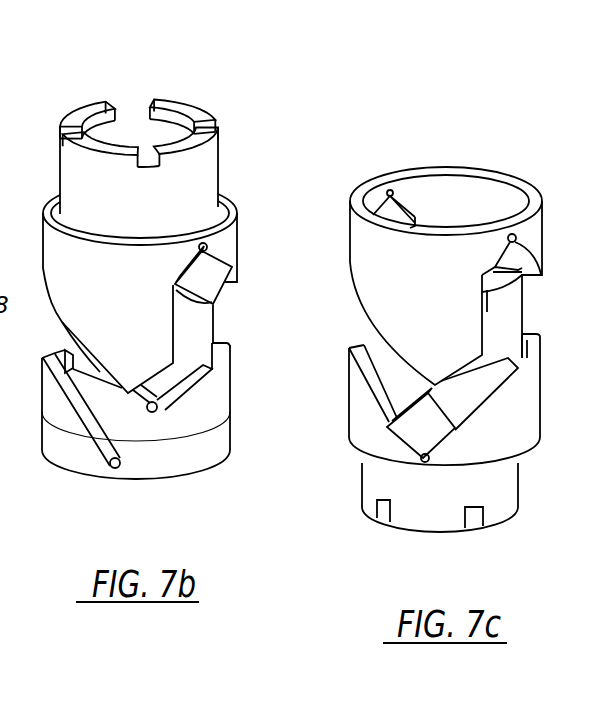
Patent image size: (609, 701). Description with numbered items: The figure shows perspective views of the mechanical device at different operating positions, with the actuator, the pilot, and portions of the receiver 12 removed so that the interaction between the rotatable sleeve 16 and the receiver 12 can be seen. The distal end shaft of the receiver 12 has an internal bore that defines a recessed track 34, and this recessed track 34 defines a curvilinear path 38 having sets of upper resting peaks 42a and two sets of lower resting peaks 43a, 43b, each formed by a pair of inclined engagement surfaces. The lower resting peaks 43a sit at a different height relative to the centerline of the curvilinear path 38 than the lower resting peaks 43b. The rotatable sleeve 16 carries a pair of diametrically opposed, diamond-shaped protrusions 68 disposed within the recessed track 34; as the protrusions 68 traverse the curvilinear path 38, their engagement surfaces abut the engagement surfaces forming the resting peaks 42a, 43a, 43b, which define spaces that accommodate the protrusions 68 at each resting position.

In FIG. 7B, the receiver 12 is at (83, 485).
In FIG. 7C, the receiver 12 is at (428, 148).
In FIG. 7B, the rotatable sleeve 16 is at (193, 90).
In FIG. 7C, the rotatable sleeve 16 is at (347, 481).
In FIG. 7B, the recessed track 34 is at (107, 408).
In FIG. 7C, the recessed track 34 is at (480, 381).
In FIG. 7B, the curvilinear path 38 is at (136, 408).
In FIG. 7C, the curvilinear path 38 is at (526, 306).
In FIG. 7B, the upper resting peaks 42a is at (203, 243).
In FIG. 7C, the upper resting peaks 42a is at (510, 234).
In FIG. 7B, the lower resting peaks 43a is at (116, 470).
In FIG. 7B, the lower resting peaks 43b is at (213, 368).
In FIG. 7C, the lower resting peaks 43b is at (540, 393).
In FIG. 7B, the protrusions 68 is at (216, 288).
In FIG. 7C, the protrusions 68 is at (420, 432).